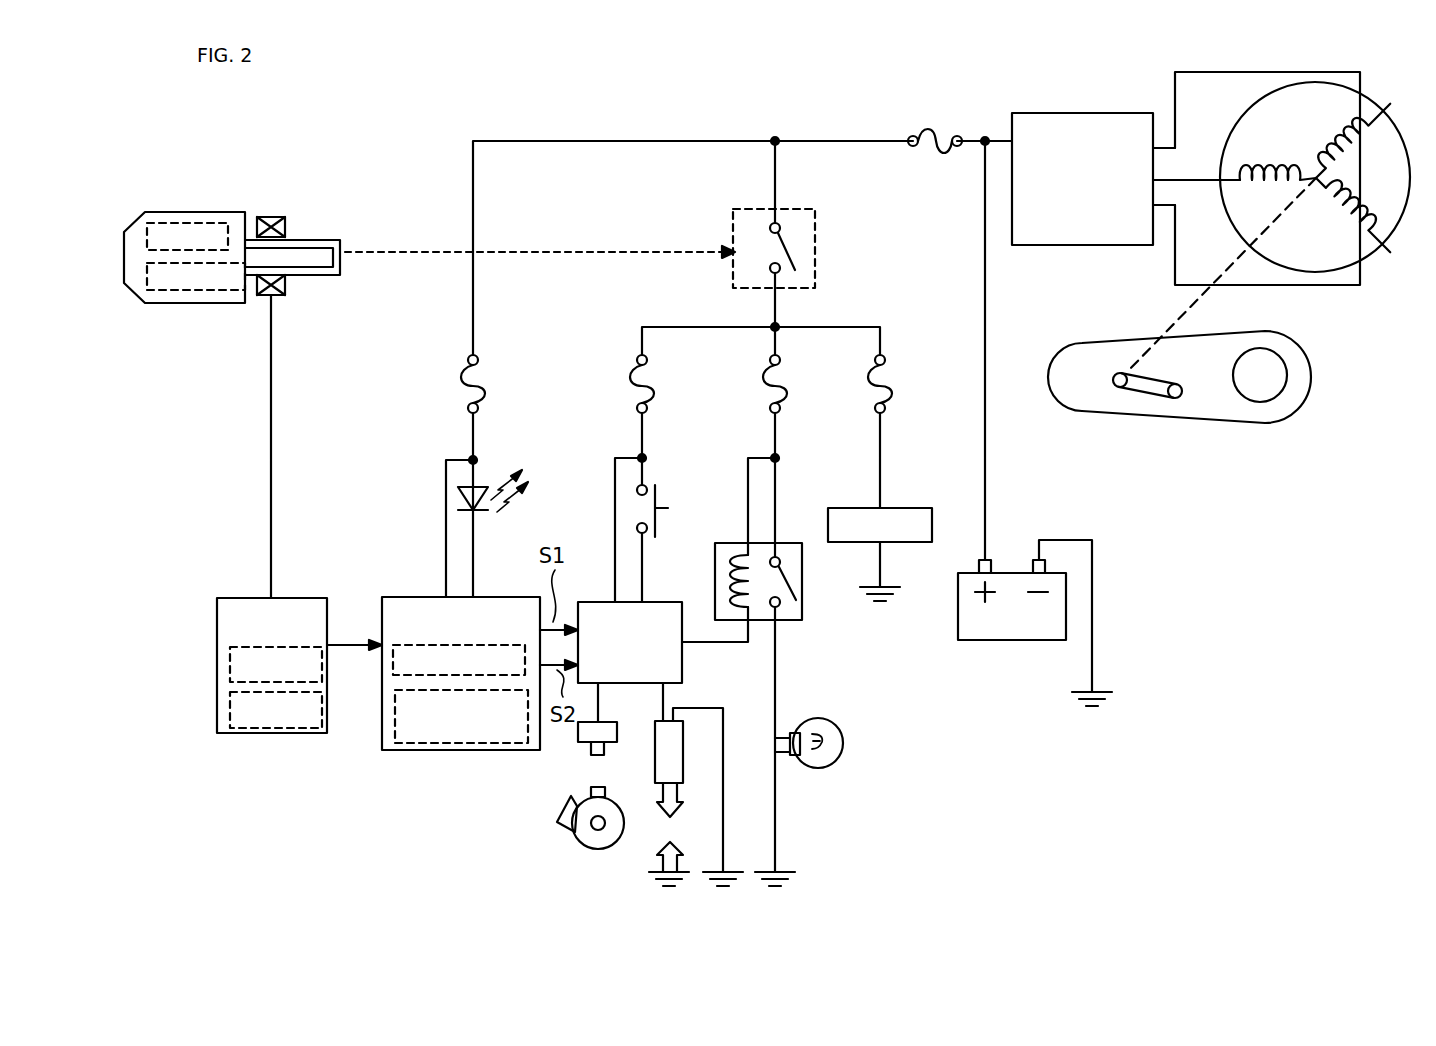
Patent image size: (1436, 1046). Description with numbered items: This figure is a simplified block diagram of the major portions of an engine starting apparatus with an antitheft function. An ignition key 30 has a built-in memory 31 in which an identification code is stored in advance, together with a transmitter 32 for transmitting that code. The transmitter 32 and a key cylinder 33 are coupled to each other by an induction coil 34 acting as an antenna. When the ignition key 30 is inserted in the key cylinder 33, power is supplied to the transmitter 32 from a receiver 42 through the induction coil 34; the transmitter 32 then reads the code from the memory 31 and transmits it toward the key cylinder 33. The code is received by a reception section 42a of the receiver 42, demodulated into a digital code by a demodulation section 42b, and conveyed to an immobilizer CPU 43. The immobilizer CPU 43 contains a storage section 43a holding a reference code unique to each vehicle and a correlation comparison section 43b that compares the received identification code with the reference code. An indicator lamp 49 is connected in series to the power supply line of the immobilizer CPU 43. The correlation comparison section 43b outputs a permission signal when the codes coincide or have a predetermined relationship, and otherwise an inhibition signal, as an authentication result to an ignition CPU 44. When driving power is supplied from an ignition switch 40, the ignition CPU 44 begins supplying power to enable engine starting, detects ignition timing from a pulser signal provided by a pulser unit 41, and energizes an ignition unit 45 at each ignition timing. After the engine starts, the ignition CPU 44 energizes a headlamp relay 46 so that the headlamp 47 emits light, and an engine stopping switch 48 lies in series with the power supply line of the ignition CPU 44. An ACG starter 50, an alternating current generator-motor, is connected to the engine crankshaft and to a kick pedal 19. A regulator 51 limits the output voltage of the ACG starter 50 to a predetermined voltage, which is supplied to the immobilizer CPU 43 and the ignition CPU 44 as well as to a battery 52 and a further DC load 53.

The kick pedal 19 is at (1170, 410).
The ignition key 30 is at (130, 307).
The memory 31 is at (162, 222).
The transmitter 32 is at (215, 292).
The key cylinder 33 is at (344, 238).
The induction coil 34 is at (288, 294).
The ignition switch 40 is at (815, 250).
The pulser unit 41 is at (556, 781).
The receiver 42 is at (240, 597).
The reception section 42a is at (230, 657).
The demodulation section 42b is at (232, 700).
The immobilizer CPU 43 is at (425, 597).
The storage section 43a is at (392, 666).
The correlation comparison section 43b is at (437, 750).
The ignition CPU 44 is at (659, 603).
The ignition unit 45 is at (703, 697).
The headlamp relay 46 is at (803, 612).
The headlamp 47 is at (836, 766).
The engine stopping switch 48 is at (668, 506).
The indicator lamp 49 is at (490, 480).
The ACG starter 50 is at (1392, 240).
The regulator 51 is at (1098, 112).
The battery 52 is at (998, 642).
The DC load 53 is at (905, 509).